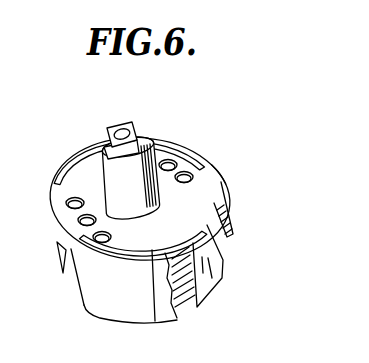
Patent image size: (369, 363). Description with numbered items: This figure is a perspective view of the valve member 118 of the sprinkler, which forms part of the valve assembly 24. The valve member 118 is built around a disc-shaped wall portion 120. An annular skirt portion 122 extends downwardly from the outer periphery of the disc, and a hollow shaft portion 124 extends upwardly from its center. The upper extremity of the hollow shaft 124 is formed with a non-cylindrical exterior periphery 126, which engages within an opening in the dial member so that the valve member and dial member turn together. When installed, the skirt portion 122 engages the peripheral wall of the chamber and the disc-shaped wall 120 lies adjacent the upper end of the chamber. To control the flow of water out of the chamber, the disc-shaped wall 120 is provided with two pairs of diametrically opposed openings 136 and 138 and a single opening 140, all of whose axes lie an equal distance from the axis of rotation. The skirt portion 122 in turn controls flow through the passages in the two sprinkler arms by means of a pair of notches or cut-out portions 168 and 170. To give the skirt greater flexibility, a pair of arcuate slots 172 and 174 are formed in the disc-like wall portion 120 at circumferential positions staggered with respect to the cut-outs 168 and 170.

The valve assembly 24 is at (186, 134).
The valve member 118 is at (228, 175).
The disc-shaped wall portion 120 is at (200, 204).
The annular skirt portion 122 is at (129, 307).
The hollow shaft portion 124 is at (100, 168).
The non-cylindrical exterior periphery 126 is at (133, 125).
The openings 136 is at (175, 163).
The openings 138 is at (190, 173).
The single opening 140 is at (68, 203).
The cut-out portion 168 is at (84, 290).
The cut-out portion 170 is at (224, 262).
The arcuate slot 172 is at (117, 178).
The arcuate slot 174 is at (166, 318).